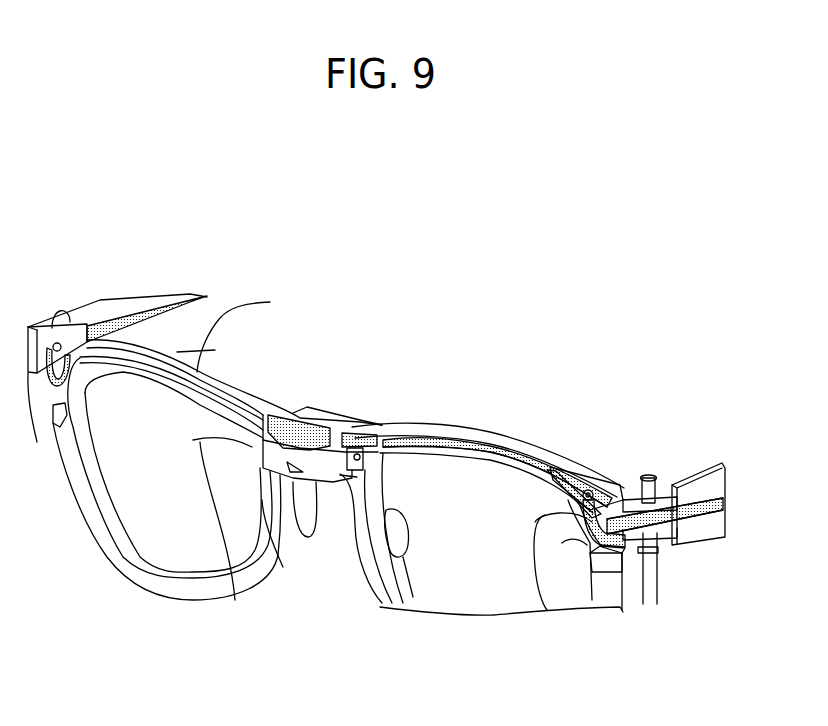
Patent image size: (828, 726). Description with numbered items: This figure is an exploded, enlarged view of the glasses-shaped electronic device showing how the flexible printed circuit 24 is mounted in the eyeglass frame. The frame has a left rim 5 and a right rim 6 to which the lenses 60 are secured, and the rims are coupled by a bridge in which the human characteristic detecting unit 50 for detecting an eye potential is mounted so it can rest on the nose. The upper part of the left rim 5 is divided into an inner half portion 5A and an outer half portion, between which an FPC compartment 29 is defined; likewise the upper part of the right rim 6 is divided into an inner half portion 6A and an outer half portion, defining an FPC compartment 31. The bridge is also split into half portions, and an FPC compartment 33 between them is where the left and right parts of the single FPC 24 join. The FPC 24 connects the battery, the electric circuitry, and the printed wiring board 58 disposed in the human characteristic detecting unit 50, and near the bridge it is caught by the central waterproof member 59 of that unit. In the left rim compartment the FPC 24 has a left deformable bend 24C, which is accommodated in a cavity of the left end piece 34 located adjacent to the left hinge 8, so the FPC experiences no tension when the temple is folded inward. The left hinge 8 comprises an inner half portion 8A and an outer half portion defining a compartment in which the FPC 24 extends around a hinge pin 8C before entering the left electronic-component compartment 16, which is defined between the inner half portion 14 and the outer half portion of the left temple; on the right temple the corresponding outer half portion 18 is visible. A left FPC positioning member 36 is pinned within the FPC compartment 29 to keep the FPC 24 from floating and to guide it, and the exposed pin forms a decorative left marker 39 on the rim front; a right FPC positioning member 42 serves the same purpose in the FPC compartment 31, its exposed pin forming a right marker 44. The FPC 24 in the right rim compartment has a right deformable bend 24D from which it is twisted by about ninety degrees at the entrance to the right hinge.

The left rim 5 is at (450, 428).
The inner half portion 5A is at (503, 443).
The right rim 6 is at (273, 376).
The inner half portion 6A is at (217, 340).
The left hinge 8 is at (663, 542).
The inner half portion 8A is at (655, 478).
The hinge pin 8C is at (646, 555).
The inner half portion 14 is at (712, 540).
The left electronic-component compartment 16 is at (692, 536).
The outer half portion 18 is at (100, 302).
The flexible printed circuit 24 is at (148, 312).
The left deformable bend 24C is at (565, 547).
The right deformable bend 24D is at (29, 385).
The FPC compartment 29 is at (520, 450).
The FPC compartment 31 is at (177, 356).
The FPC compartment 33 is at (235, 600).
The left end piece 34 is at (545, 514).
The left FPC positioning member 36 is at (580, 479).
The left marker 39 is at (607, 492).
The right FPC positioning member 42 is at (78, 336).
The right marker 44 is at (58, 341).
The human characteristic detecting unit 50 is at (337, 403).
The printed wiring board 58 is at (317, 462).
The central waterproof member 59 is at (273, 445).
The lenses 60 is at (160, 555).